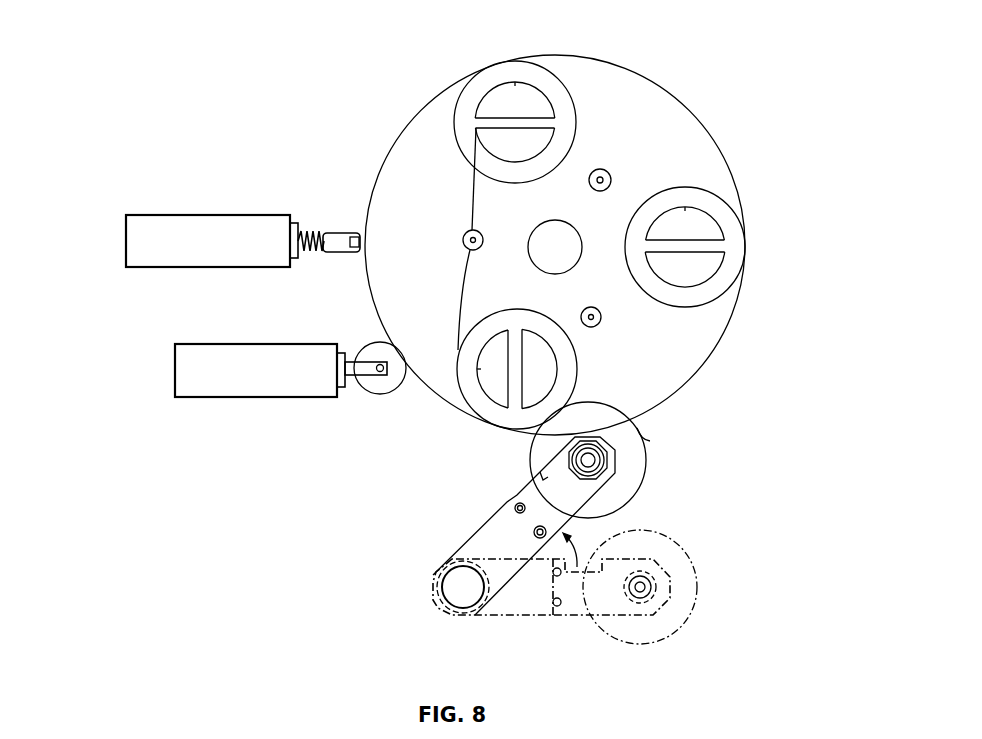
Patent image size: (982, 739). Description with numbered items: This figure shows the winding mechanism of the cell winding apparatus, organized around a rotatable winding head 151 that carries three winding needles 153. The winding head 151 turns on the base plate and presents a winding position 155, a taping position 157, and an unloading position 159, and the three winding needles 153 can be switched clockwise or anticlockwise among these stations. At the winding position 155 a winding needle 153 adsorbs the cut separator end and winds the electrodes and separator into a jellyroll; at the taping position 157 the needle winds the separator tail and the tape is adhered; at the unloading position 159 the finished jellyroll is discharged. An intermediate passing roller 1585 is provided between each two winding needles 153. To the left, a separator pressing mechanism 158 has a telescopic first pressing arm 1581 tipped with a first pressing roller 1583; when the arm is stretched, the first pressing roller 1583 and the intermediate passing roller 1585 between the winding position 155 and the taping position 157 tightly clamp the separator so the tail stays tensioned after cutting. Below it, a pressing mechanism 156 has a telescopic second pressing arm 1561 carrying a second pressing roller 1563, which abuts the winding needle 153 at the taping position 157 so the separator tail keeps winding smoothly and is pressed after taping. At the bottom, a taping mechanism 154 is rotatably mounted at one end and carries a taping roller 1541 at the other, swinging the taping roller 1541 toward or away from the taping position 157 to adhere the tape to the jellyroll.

The winding head 151 is at (725, 157).
The winding needle 153 is at (700, 238).
The taping mechanism 154 is at (570, 487).
The taping roller 1541 is at (647, 460).
The winding position 155 is at (582, 47).
The pressing mechanism 156 is at (185, 377).
The second pressing arm 1561 is at (333, 397).
The second pressing roller 1563 is at (400, 393).
The taping position 157 is at (448, 457).
The separator pressing mechanism 158 is at (150, 238).
The first pressing arm 1581 is at (298, 225).
The first pressing roller 1583 is at (356, 232).
The intermediate passing roller 1585 is at (471, 230).
The unloading position 159 is at (734, 338).